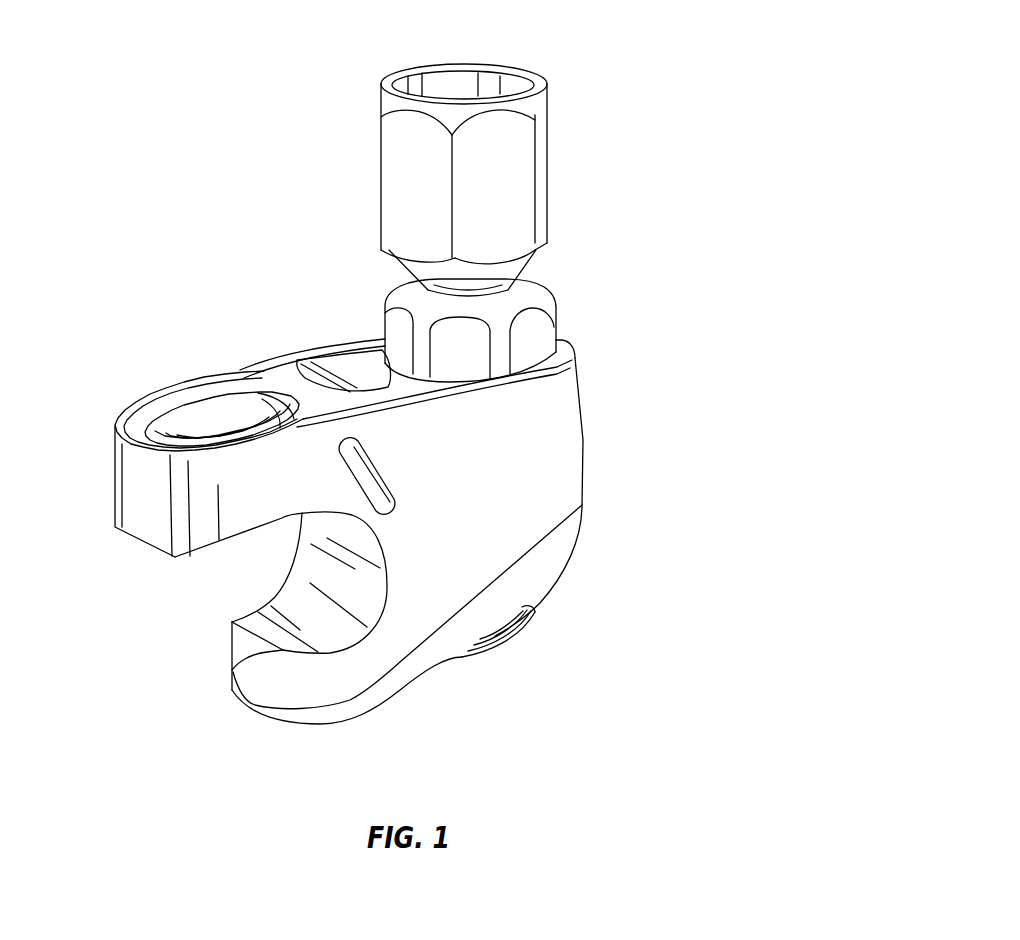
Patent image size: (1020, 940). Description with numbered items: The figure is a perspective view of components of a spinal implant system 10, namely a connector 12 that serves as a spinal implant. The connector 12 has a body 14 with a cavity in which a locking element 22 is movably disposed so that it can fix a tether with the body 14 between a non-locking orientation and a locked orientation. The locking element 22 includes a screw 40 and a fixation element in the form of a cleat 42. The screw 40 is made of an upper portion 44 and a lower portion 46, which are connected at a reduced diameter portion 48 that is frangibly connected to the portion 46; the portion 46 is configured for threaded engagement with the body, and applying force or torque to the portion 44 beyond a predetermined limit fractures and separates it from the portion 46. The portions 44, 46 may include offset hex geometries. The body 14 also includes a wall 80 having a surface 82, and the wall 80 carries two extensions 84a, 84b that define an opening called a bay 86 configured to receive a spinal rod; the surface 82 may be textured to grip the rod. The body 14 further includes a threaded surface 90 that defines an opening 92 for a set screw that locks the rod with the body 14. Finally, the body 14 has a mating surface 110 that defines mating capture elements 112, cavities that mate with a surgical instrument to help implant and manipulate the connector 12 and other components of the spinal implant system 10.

The spinal implant system 10 is at (723, 41).
The connector 12 is at (753, 248).
The body 14 is at (567, 446).
The locking element 22 is at (610, 168).
The screw 40 is at (381, 160).
The cleat 42 is at (357, 375).
The portion 44 is at (510, 222).
The portion 46 is at (527, 340).
The reduced diameter portion 48 is at (537, 284).
The wall 80 is at (362, 600).
The surface 82 is at (350, 577).
The extension 84a is at (150, 540).
The extension 84b is at (270, 682).
The bay 86 is at (177, 620).
The surface 90 is at (157, 412).
The opening 92 is at (212, 400).
The mating surface 110 is at (390, 495).
The mating capture elements 112 is at (391, 511).